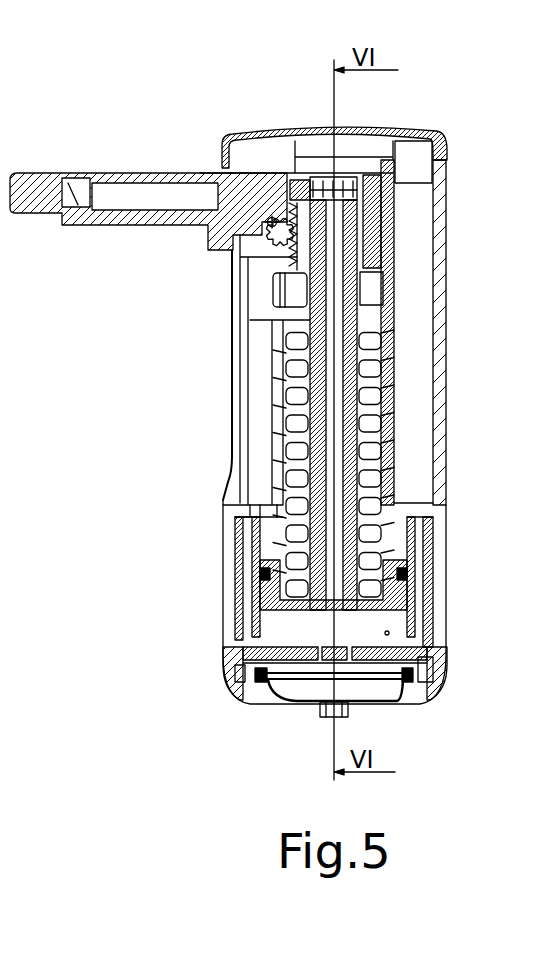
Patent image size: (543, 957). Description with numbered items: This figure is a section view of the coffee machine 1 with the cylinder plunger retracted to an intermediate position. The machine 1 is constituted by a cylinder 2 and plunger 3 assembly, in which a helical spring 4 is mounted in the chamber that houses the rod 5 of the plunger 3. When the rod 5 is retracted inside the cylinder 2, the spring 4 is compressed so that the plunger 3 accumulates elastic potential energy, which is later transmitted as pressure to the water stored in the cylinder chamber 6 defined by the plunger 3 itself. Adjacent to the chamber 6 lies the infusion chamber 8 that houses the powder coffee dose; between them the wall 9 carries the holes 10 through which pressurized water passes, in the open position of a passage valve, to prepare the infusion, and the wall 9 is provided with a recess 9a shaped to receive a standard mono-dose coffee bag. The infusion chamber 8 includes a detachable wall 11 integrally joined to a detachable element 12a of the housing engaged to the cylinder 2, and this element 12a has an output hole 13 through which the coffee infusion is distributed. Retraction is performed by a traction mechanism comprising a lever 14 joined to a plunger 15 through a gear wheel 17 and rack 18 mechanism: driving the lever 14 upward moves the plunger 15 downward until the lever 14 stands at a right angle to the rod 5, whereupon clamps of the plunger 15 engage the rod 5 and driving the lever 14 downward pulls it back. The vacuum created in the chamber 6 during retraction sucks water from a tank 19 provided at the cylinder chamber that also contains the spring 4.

The machine 1 is at (0, 107).
The cylinder 2 is at (240, 548).
The plunger 3 is at (400, 600).
The helical spring 4 is at (360, 443).
The rod 5 is at (360, 326).
The cylinder chamber 6 is at (280, 633).
The infusion chamber 8 is at (393, 684).
The wall 9 is at (273, 663).
The recess 9a is at (380, 656).
The holes 10 is at (290, 672).
The detachable wall 11 is at (368, 678).
The detachable element 12a is at (393, 688).
The output hole 13 is at (330, 705).
The lever 14 is at (183, 177).
The plunger 15 is at (382, 230).
The gear wheel 17 is at (262, 238).
The rack 18 is at (293, 248).
The tank 19 is at (410, 278).